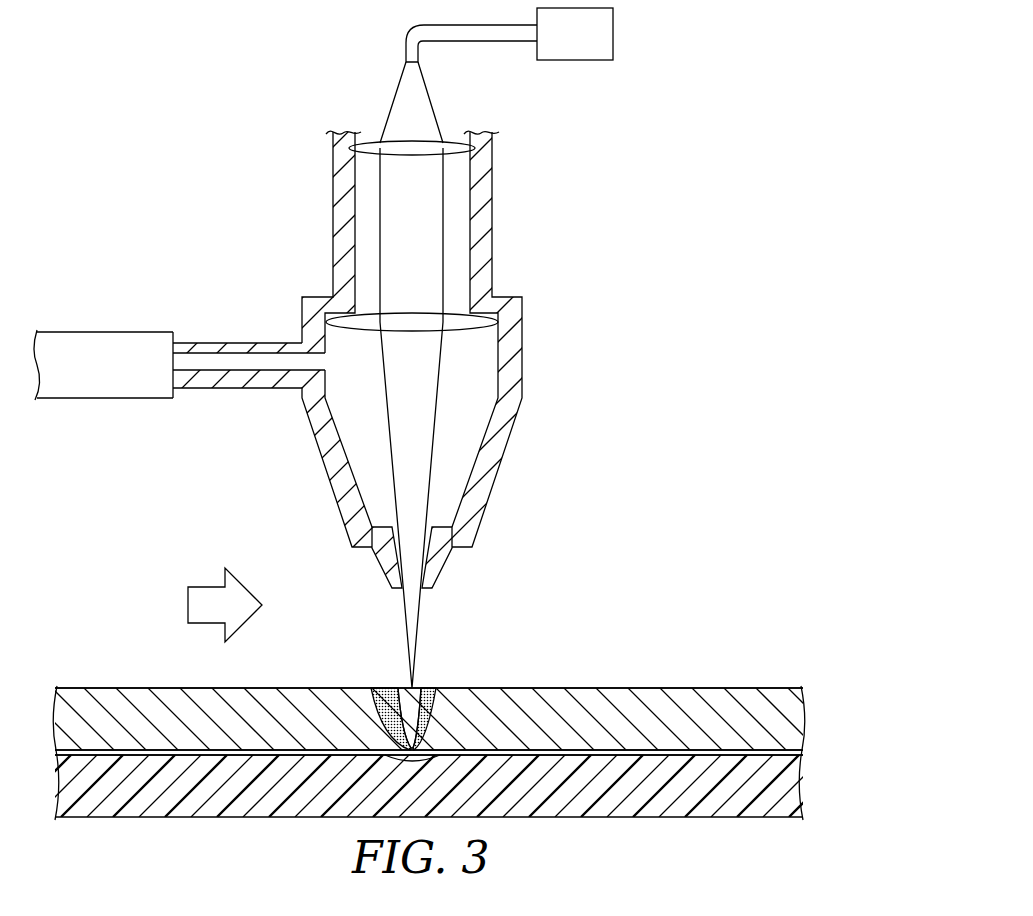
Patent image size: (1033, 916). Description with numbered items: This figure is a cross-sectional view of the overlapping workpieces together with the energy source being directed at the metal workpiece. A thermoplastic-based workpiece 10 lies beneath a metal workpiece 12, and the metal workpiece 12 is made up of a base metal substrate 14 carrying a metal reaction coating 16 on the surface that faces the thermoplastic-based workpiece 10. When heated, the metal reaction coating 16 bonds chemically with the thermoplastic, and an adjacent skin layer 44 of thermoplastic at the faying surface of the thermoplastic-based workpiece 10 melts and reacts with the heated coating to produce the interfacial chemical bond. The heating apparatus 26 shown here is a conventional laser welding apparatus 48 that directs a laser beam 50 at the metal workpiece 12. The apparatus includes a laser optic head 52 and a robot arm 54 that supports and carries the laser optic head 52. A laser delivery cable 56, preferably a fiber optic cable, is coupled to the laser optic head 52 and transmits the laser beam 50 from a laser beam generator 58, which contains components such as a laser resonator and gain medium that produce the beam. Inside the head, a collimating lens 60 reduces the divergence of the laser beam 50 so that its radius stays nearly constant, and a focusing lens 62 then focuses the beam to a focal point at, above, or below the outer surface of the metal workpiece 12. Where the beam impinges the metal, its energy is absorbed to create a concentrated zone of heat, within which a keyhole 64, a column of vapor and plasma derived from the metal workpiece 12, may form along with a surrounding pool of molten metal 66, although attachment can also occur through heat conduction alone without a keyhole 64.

The thermoplastic-based workpiece 10 is at (808, 790).
The metal workpiece 12 is at (803, 718).
The base metal substrate 14 is at (733, 693).
The metal reaction coating 16 is at (613, 752).
The heating apparatus 26 is at (491, 327).
The skin layer 44 is at (422, 747).
The conventional laser welding apparatus 48 is at (491, 300).
The laser beam 50 is at (413, 627).
The laser optic head 52 is at (493, 485).
The robot arm 54 is at (103, 355).
The laser delivery cable 56 is at (495, 42).
The laser beam generator 58 is at (598, 28).
The collimating lens 60 is at (372, 147).
The focusing lens 62 is at (462, 326).
The keyhole 64 is at (412, 705).
The pool of molten metal 66 is at (390, 697).